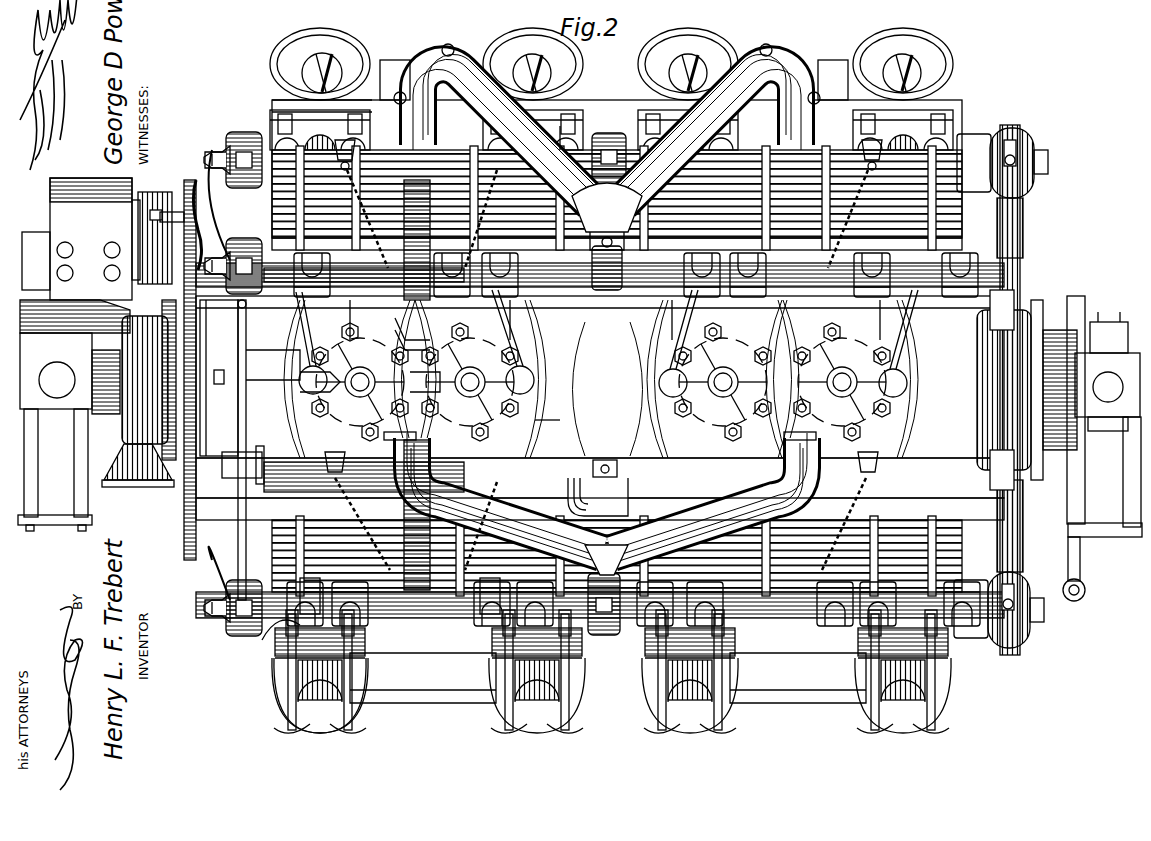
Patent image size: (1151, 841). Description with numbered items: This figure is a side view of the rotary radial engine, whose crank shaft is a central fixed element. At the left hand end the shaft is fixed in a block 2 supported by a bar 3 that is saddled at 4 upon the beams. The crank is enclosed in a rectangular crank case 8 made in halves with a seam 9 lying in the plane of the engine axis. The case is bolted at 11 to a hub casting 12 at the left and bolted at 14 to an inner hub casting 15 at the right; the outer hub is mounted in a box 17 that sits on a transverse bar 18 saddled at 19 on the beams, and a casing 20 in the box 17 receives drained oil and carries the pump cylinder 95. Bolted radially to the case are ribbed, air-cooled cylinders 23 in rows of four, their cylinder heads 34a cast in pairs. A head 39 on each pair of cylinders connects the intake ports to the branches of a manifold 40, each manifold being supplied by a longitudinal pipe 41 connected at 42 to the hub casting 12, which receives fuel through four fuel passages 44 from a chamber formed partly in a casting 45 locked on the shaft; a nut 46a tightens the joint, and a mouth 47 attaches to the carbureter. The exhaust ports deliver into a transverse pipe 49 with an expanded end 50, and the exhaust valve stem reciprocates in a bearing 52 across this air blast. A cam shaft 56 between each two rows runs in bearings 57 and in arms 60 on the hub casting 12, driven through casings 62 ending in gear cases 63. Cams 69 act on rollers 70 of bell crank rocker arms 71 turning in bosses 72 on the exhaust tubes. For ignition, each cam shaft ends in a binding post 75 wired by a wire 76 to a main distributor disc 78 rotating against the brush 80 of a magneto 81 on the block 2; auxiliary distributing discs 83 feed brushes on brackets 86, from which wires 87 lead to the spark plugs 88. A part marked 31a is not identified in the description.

The block 2 is at (45, 320).
The bar 3 is at (322, 60).
The saddle 4 is at (85, 464).
The crank case 8 is at (1008, 128).
The seam 9 is at (610, 385).
The bolted connection 11 is at (273, 360).
The hub casting 12 is at (200, 390).
The bolted connection 14 is at (1040, 318).
The inner hub casting 15 is at (980, 370).
The box 17 is at (1076, 296).
The transverse bar 18 is at (1108, 372).
The saddle 19 is at (1094, 432).
The casing 20 is at (1064, 452).
The cylinders 23 is at (290, 544).
The port 31a is at (370, 375).
The cylinder heads 34a is at (567, 126).
The head 39 is at (608, 363).
The manifold 40 is at (560, 140).
The supply pipe 41 is at (364, 375).
The pipe connection 42 is at (256, 452).
The fuel passages 44 is at (246, 344).
The casting 45 is at (149, 380).
The nut 46a is at (102, 418).
The mouth 47 is at (132, 482).
The transverse pipe 49 is at (595, 384).
The expanded end 50 is at (736, 52).
The bearing 52 is at (544, 78).
The cam shaft 56 is at (592, 292).
The bearings 57 is at (232, 134).
The arms 60 is at (232, 224).
The casings 62 is at (1024, 236).
The gear cases 63 is at (1034, 148).
The cams 69 is at (366, 598).
The rollers 70 is at (276, 635).
The bell crank rocker arms 71 is at (577, 676).
The bosses 72 is at (880, 740).
The binding post 75 is at (208, 152).
The wire 76 is at (183, 211).
The main distributor disc 78 is at (200, 338).
The brush 80 is at (178, 212).
The magneto 81 is at (97, 239).
The auxiliary distributing discs 83 is at (418, 385).
The brackets 86 is at (412, 334).
The wires 87 is at (852, 490).
The spark plugs 88 is at (340, 140).
The pump cylinder 95 is at (1080, 516).